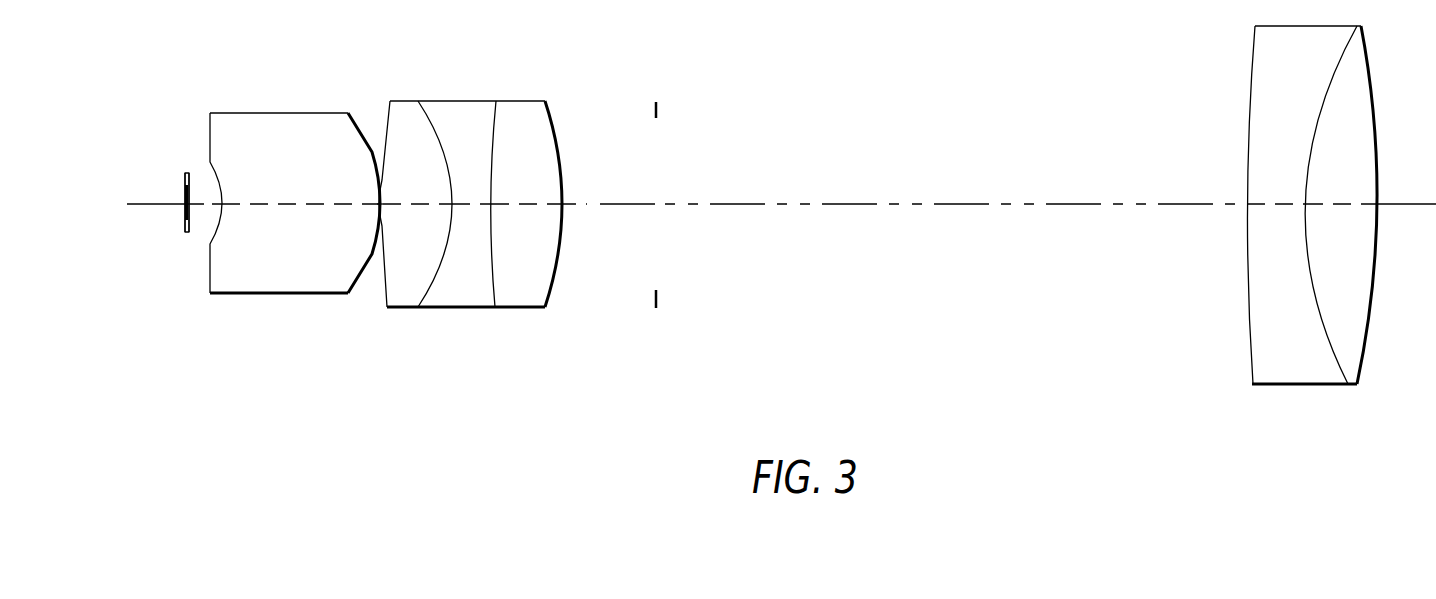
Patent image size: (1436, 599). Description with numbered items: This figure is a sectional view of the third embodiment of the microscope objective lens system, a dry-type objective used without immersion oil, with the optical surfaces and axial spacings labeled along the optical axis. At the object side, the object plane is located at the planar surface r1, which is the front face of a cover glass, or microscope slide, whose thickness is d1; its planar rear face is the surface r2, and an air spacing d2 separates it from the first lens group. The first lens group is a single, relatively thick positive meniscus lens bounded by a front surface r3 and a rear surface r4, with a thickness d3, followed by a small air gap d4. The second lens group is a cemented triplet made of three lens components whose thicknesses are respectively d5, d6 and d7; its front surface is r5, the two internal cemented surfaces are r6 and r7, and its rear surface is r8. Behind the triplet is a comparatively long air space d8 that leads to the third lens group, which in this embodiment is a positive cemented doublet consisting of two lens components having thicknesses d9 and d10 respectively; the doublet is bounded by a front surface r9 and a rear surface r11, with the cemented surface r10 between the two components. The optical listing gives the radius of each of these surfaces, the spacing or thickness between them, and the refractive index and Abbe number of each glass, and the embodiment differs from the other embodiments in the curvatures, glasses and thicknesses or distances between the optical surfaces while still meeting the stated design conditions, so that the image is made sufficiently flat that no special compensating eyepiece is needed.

The cover glass thickness d1 is at (184, 184).
The air spacing between cover glass and first lens group d2 is at (209, 202).
The thickness of positive meniscus lens d3 is at (293, 204).
The air spacing between first and second lens groups d4 is at (380, 178).
The thickness of first component of cemented triplet d5 is at (408, 204).
The thickness of second component of cemented triplet d6 is at (467, 204).
The thickness of third component of cemented triplet d7 is at (519, 204).
The air spacing between second and third lens groups d8 is at (716, 204).
The thickness of first component of cemented doublet d9 is at (1272, 204).
The thickness of second component of cemented doublet d10 is at (1344, 204).
The object plane surface r1 is at (186, 228).
The rear surface of cover glass r2 is at (190, 231).
The front surface of positive meniscus lens r3 is at (222, 240).
The rear surface of positive meniscus lens r4 is at (370, 262).
The front surface of cemented triplet r5 is at (386, 282).
The first cemented surface of triplet r6 is at (436, 268).
The second cemented surface of triplet r7 is at (491, 266).
The rear surface of cemented triplet r8 is at (553, 278).
The front surface of cemented doublet r9 is at (1248, 321).
The cemented surface of doublet r10 is at (1329, 340).
The rear surface of cemented doublet r11 is at (1372, 315).